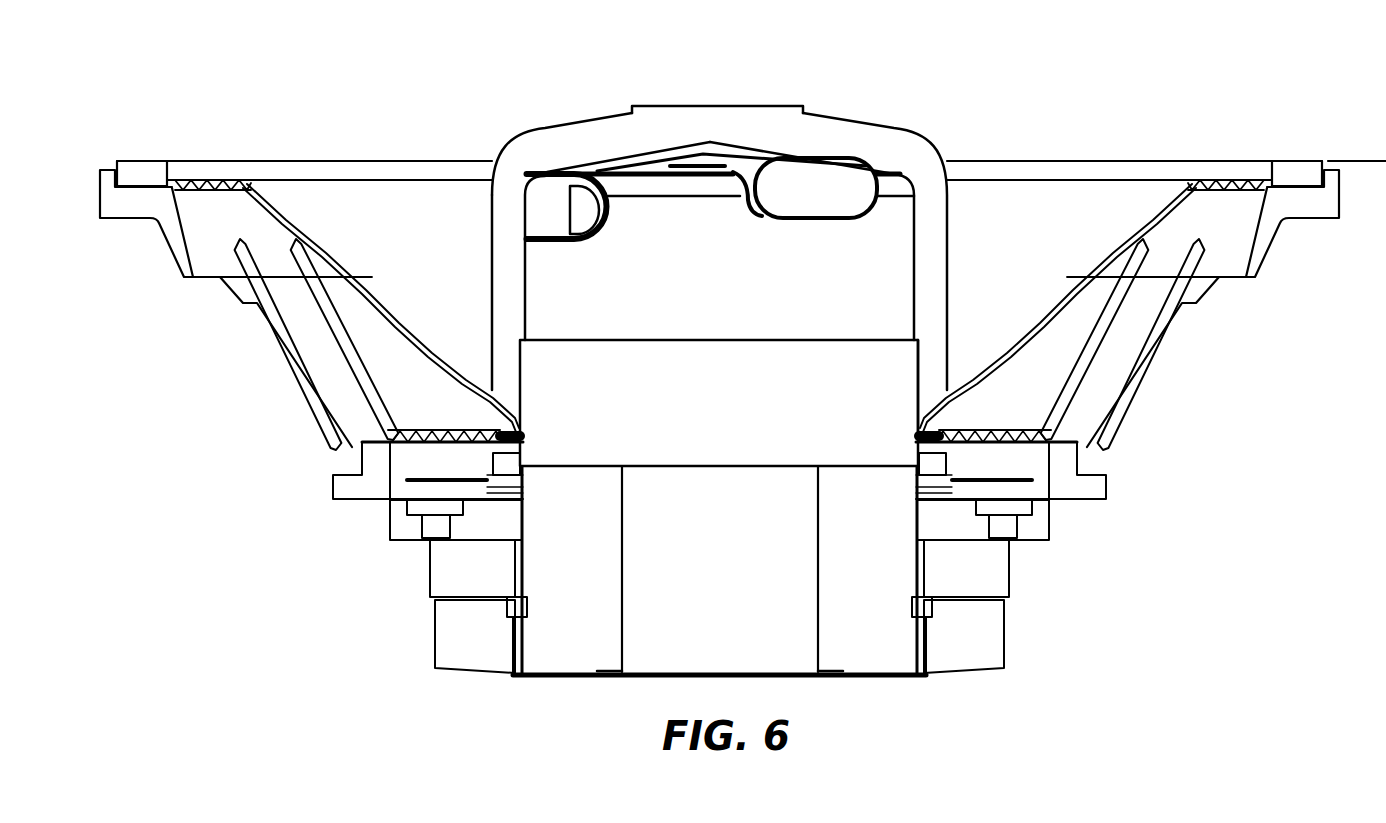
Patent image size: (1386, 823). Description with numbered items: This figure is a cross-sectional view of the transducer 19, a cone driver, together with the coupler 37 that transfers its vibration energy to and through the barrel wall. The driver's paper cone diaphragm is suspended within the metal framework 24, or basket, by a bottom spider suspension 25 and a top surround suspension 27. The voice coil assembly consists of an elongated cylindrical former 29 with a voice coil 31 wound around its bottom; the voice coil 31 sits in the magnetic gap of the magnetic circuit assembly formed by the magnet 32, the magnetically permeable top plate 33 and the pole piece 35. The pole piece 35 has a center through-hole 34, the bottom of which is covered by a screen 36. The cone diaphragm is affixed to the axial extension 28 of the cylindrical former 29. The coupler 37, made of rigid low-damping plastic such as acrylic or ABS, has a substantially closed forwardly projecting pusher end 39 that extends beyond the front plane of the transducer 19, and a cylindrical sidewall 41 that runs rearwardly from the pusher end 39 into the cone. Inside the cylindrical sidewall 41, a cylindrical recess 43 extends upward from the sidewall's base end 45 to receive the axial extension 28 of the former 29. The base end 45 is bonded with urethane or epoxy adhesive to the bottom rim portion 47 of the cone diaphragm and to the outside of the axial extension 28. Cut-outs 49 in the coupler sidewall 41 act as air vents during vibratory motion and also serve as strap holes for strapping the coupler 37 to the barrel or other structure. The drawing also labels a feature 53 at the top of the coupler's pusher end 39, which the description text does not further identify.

The transducer 19 is at (1160, 62).
The metal framework 24 is at (273, 334).
The bottom spider suspension 25 is at (358, 465).
The top surround suspension 27 is at (203, 182).
The axial extension 28 is at (527, 393).
The cylindrical former 29 is at (395, 470).
The voice coil 31 is at (527, 518).
The magnet 32 is at (463, 566).
The magnetically permeable top plate 33 is at (400, 525).
The center through-hole 34 is at (764, 632).
The pole piece 35 is at (567, 594).
The screen 36 is at (657, 673).
The coupler 37 is at (900, 127).
The pusher end 39 is at (633, 113).
The cylindrical sidewall 41 is at (500, 247).
The cylindrical recess 43 is at (935, 372).
The base end 45 is at (950, 385).
The bottom rim portion 47 is at (403, 418).
The cut-outs 49 is at (797, 170).
The cover 53 is at (720, 104).